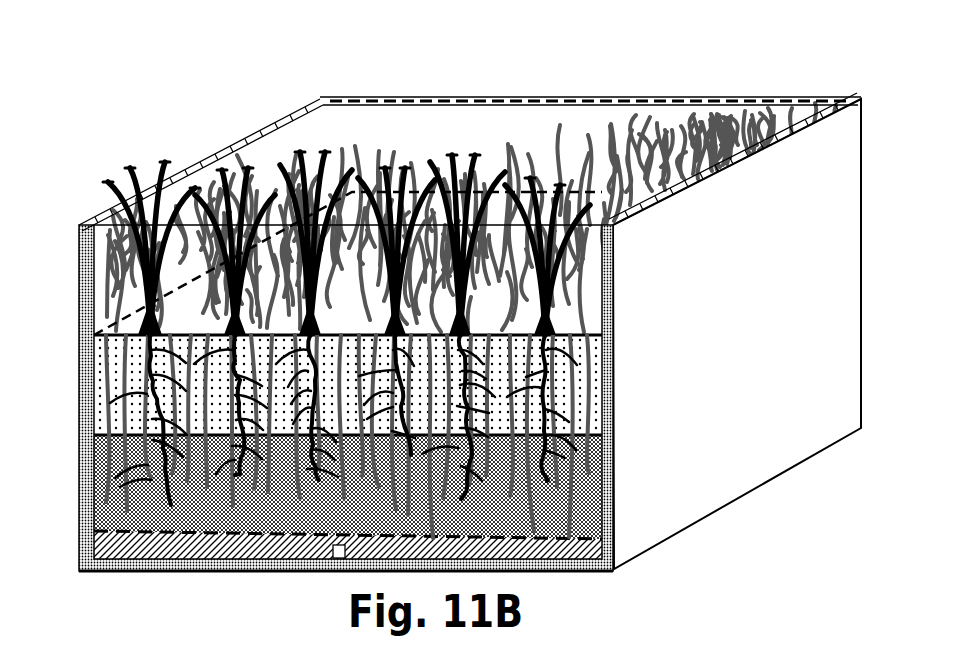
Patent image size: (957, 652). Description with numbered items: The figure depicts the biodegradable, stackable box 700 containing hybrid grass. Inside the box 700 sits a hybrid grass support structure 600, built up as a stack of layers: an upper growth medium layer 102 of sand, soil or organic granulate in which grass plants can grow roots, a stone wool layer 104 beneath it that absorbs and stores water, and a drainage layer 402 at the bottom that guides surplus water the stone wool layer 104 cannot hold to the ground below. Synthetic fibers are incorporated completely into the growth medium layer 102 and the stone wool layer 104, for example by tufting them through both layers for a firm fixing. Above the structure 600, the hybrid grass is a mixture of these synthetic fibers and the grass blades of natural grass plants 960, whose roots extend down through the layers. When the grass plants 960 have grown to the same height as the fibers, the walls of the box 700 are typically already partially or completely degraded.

The hybrid grass support structure 600 is at (538, 120).
The natural grass plants 960 is at (151, 165).
The biodegradable, stackable box 700 is at (821, 202).
The growth medium layer 102 is at (585, 383).
The stone wool layer 104 is at (593, 481).
The drainage layer 402 is at (594, 559).